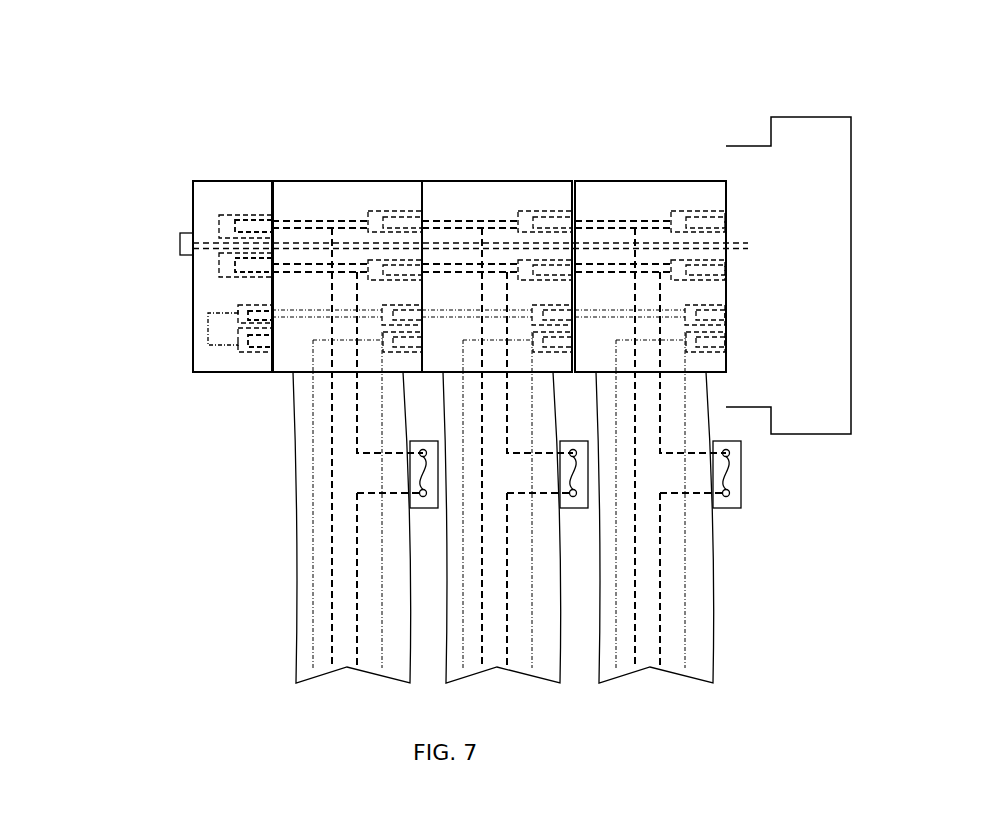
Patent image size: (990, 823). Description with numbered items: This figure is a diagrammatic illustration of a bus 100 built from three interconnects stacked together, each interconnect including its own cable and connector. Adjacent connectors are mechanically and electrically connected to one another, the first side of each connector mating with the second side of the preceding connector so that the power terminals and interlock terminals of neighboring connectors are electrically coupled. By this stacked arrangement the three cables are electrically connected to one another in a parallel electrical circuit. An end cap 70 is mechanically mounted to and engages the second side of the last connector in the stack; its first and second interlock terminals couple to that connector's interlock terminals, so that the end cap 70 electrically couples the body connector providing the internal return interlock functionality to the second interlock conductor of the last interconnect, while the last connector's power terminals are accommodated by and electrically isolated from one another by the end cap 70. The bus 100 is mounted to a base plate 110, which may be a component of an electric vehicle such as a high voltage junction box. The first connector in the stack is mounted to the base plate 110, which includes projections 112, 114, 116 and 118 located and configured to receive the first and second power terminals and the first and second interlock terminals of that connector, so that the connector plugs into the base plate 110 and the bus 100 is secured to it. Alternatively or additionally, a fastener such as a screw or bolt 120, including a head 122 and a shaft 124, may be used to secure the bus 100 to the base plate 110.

The bus 100 is at (578, 110).
The end cap 70 is at (212, 370).
The bolt 120 is at (200, 232).
The head 122 is at (179, 245).
The shaft 124 is at (748, 245).
The base plate 110 is at (837, 303).
The projection 114 is at (799, 181).
The projection 112 is at (815, 246).
The projection 118 is at (817, 338).
The projection 116 is at (824, 384).